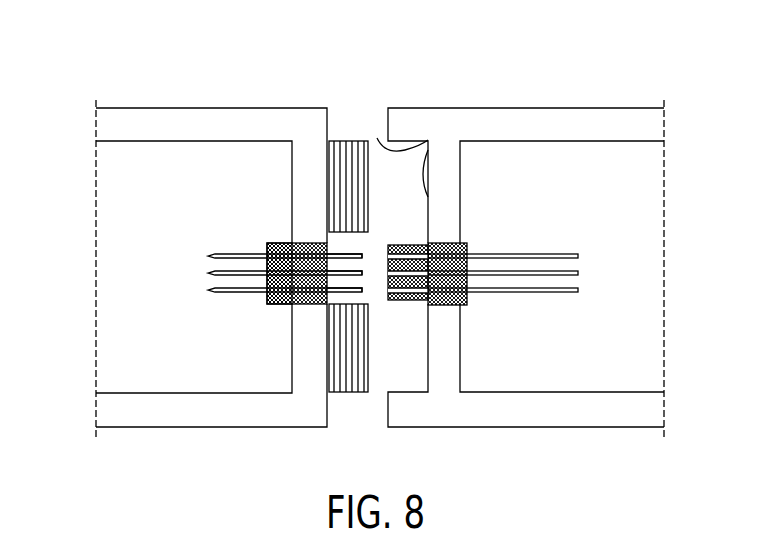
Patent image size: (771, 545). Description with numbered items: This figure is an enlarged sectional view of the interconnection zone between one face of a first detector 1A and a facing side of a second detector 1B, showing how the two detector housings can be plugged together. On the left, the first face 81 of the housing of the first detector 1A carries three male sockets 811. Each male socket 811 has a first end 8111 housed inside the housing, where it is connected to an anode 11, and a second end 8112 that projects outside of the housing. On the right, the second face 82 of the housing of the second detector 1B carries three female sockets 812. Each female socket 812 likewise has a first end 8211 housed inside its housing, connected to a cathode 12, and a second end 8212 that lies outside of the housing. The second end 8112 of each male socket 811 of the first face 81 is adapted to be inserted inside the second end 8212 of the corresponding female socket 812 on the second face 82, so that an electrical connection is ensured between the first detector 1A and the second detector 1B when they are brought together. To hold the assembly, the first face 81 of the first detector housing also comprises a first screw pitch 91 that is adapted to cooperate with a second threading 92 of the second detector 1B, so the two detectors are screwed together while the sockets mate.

The first detector 1A is at (118, 168).
The second detector 1B is at (647, 163).
The anode 11 is at (208, 290).
The second conductors 12 is at (560, 256).
The first face 81 is at (284, 257).
The male sockets 811 is at (284, 366).
The first end of male socket 8111 is at (266, 290).
The second end of male socket 8112 is at (362, 291).
The female sockets 812 is at (471, 331).
The first part of receptacle 8211 is at (467, 260).
The second end of female socket 8212 is at (389, 268).
The second face 82 is at (430, 155).
The first screw pitch 91 is at (345, 140).
The second threading 92 is at (377, 140).